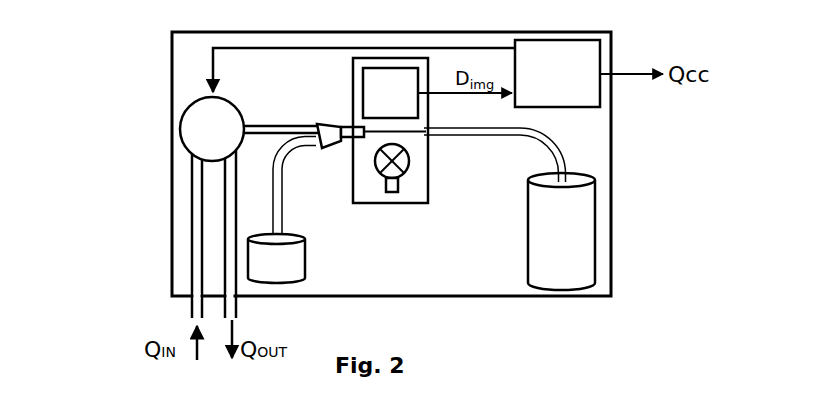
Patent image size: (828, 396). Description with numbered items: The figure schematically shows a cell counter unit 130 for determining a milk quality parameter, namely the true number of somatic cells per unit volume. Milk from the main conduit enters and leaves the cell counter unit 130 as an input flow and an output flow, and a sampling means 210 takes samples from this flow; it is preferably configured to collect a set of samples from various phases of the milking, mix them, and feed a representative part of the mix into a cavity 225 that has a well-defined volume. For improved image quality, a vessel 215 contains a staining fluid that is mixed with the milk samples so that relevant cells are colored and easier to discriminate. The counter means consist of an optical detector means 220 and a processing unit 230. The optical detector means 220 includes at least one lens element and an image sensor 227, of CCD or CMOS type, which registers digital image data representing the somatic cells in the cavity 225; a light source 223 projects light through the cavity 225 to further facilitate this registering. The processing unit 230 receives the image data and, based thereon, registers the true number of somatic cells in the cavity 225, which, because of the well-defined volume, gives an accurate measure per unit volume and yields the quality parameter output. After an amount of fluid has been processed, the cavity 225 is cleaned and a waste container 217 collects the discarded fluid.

The cell counter unit 130 is at (172, 58).
The sampling means 210 is at (181, 127).
The vessel 215 is at (306, 257).
The waste container 217 is at (528, 261).
The optical detector means 220 is at (353, 78).
The light source 223 is at (403, 171).
The cavity 225 is at (400, 134).
The camera / image sensor 227 is at (363, 99).
The processing unit 230 is at (573, 107).